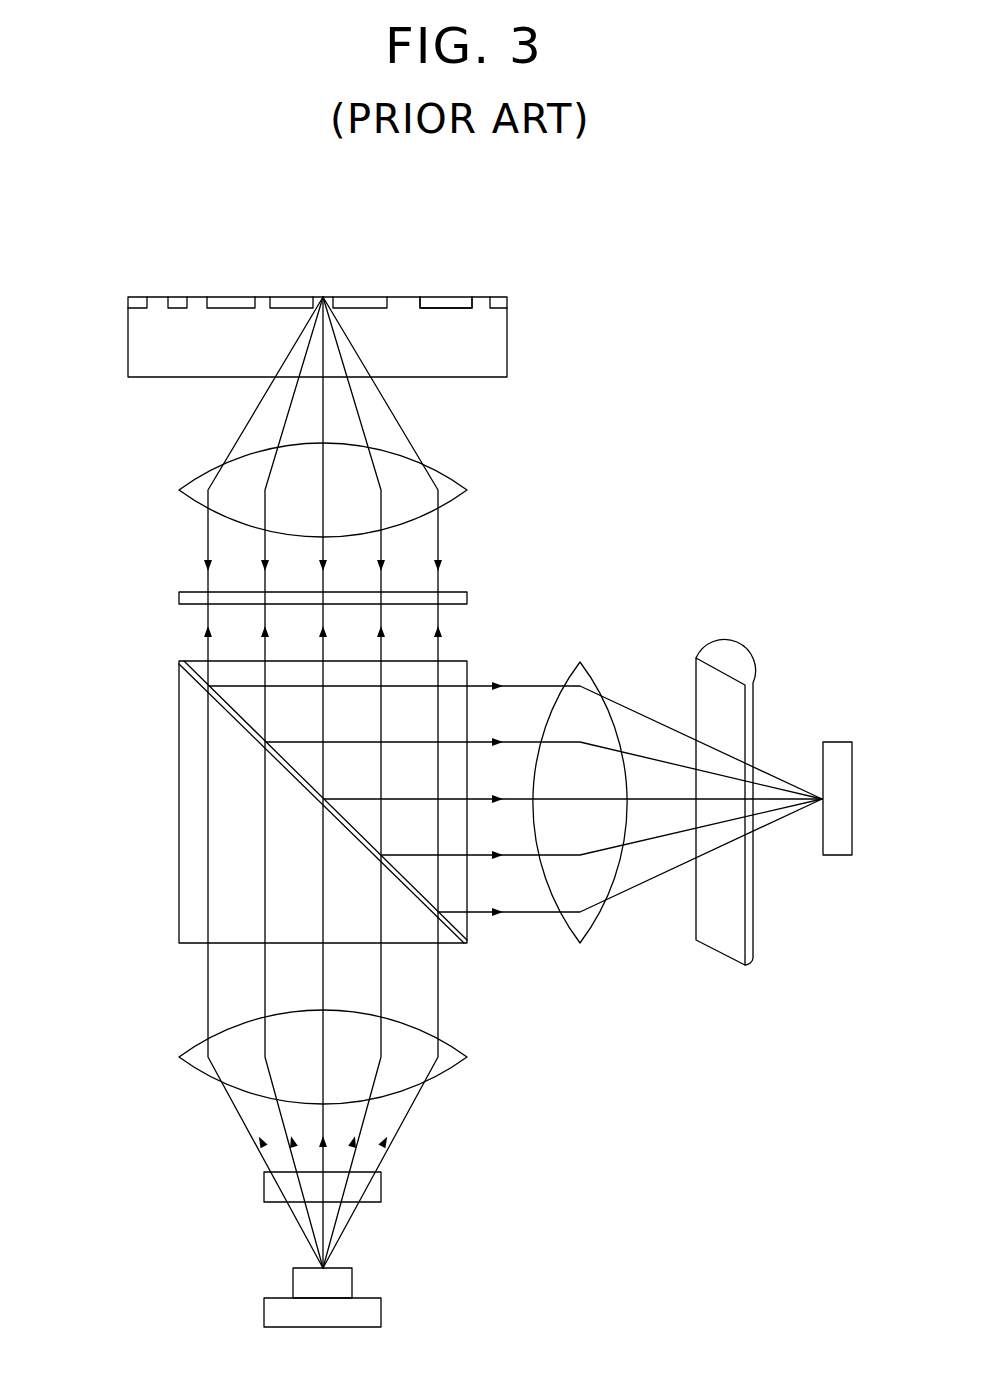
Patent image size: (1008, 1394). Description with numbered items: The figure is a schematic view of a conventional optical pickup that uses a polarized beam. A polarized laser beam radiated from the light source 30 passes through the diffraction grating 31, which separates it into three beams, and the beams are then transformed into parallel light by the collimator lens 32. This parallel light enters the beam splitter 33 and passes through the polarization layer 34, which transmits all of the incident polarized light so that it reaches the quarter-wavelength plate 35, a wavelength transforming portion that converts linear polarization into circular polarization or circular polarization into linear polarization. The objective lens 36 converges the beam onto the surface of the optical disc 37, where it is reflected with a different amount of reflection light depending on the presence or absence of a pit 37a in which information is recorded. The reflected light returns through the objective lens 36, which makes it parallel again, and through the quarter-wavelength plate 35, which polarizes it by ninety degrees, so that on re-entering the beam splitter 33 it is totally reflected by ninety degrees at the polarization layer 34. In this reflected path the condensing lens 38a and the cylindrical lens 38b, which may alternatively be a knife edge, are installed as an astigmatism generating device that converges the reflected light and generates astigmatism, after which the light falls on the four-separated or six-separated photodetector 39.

The light source 30 is at (263, 1312).
The diffraction grating 31 is at (263, 1186).
The collimator lens 32 is at (178, 1057).
The beam splitter 33 is at (187, 828).
The polarization layer 34 is at (193, 683).
The λ/4 wavelength plate 35 is at (178, 599).
The objective lens 36 is at (178, 490).
The optical disc 37 is at (500, 344).
The pit 37a is at (481, 305).
The condensing lens 38a is at (580, 662).
The cylindrical lens 38b is at (722, 658).
The photodetector 39 is at (838, 742).